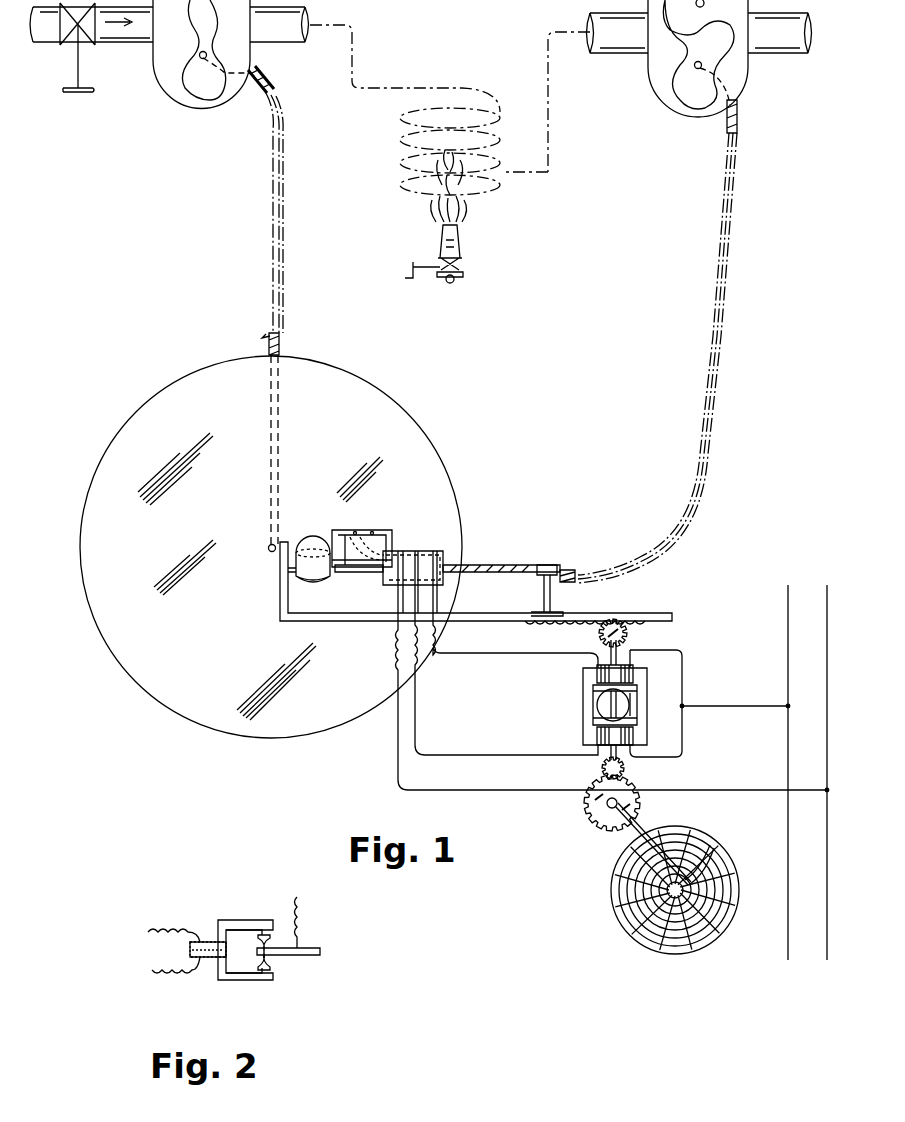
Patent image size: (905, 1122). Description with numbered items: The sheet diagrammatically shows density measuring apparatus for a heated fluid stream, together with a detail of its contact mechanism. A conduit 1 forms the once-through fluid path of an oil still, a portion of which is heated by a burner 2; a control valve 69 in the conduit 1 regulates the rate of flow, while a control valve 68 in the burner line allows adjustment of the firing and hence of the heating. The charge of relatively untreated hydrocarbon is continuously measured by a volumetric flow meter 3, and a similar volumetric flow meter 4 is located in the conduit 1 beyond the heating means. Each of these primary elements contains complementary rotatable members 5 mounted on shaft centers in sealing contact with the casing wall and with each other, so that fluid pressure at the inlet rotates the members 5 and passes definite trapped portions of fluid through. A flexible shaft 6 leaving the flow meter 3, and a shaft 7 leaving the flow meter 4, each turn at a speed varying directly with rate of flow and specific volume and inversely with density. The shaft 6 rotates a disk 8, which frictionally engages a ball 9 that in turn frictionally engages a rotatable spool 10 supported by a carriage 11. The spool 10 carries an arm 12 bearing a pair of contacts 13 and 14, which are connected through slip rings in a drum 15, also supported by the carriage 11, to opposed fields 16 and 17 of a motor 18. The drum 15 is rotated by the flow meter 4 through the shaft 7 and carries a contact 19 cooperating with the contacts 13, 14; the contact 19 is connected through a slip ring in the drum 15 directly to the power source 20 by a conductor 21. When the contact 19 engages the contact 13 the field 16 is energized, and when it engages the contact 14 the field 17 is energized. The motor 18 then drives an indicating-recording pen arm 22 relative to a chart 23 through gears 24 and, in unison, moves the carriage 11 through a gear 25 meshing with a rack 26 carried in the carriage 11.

In FIG. 1, the conduit 1 is at (118, 45).
In FIG. 1, the burner 2 is at (462, 250).
In FIG. 1, the volumetric flow meter 3 is at (158, 78).
In FIG. 1, the volumetric flow meter 4 is at (650, 78).
In FIG. 1, the rotatable members 5 is at (188, 66).
In FIG. 1, the flexible shaft 6 is at (280, 90).
In FIG. 1, the shaft 7 is at (742, 122).
In FIG. 1, the disk 8 is at (385, 395).
In FIG. 1, the ball 9 is at (300, 536).
In FIG. 1, the spool 10 is at (315, 580).
In FIG. 1, the carriage 11 is at (340, 621).
In FIG. 1, the arm 12 is at (340, 530).
In FIG. 2, the arm 12 is at (190, 950).
In FIG. 2, the contact 13 is at (232, 920).
In FIG. 2, the contact 14 is at (234, 980).
In FIG. 1, the drum 15 is at (425, 551).
In FIG. 1, the field 16 is at (597, 672).
In FIG. 1, the field 17 is at (597, 742).
In FIG. 1, the motor 18 is at (647, 712).
In FIG. 1, the contact 19 is at (385, 530).
In FIG. 2, the contact 19 is at (290, 956).
In FIG. 1, the power source 20 is at (788, 908).
In FIG. 1, the conductor 21 is at (506, 790).
In FIG. 1, the pen arm 22 is at (656, 800).
In FIG. 1, the chart 23 is at (712, 840).
In FIG. 1, the gears 24 is at (625, 771).
In FIG. 1, the gear 25 is at (628, 634).
In FIG. 1, the rack 26 is at (575, 630).
In FIG. 1, the control valve 68 is at (404, 278).
In FIG. 1, the control valve 69 is at (88, 93).